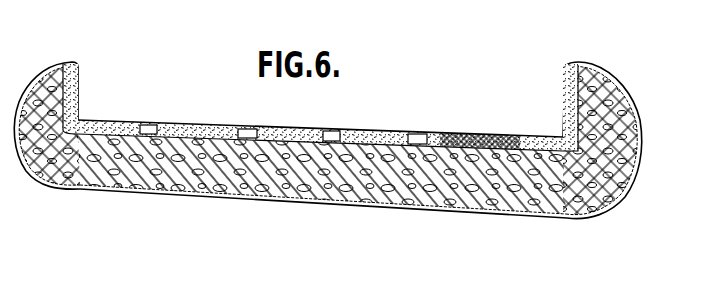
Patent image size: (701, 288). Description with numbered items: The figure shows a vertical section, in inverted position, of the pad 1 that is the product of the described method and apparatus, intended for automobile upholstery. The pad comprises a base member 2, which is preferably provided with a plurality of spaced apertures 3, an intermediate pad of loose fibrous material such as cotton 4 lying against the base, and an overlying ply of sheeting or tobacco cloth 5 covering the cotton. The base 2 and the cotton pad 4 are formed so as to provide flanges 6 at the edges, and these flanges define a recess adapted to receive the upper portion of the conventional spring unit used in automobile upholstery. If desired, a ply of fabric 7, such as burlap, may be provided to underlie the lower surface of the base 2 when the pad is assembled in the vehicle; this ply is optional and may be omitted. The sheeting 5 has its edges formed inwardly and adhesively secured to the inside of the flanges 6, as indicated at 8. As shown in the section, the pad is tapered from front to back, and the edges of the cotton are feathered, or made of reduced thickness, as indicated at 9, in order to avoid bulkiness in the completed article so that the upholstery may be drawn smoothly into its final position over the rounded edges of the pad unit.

The pad 1 is at (456, 125).
The base member 2 is at (382, 135).
The spaced apertures 3 is at (416, 134).
The intermediate pad of cotton 4 is at (313, 172).
The sheeting or tobacco cloth 5 is at (177, 194).
The flanges 6 is at (72, 63).
The ply of fabric 7 is at (108, 126).
The adhesively secured edge of sheeting 8 is at (563, 98).
The feathered edges 9 is at (614, 95).